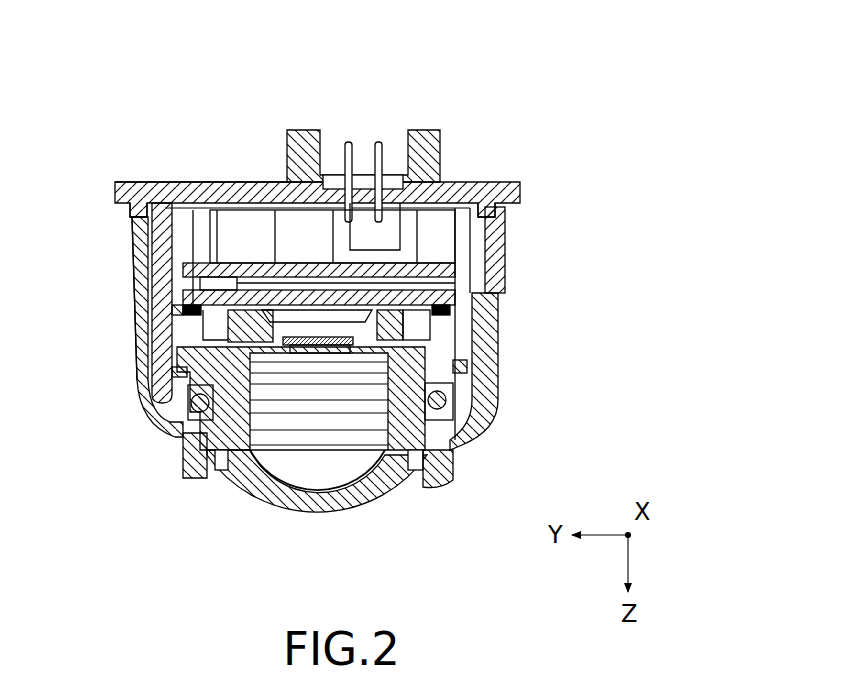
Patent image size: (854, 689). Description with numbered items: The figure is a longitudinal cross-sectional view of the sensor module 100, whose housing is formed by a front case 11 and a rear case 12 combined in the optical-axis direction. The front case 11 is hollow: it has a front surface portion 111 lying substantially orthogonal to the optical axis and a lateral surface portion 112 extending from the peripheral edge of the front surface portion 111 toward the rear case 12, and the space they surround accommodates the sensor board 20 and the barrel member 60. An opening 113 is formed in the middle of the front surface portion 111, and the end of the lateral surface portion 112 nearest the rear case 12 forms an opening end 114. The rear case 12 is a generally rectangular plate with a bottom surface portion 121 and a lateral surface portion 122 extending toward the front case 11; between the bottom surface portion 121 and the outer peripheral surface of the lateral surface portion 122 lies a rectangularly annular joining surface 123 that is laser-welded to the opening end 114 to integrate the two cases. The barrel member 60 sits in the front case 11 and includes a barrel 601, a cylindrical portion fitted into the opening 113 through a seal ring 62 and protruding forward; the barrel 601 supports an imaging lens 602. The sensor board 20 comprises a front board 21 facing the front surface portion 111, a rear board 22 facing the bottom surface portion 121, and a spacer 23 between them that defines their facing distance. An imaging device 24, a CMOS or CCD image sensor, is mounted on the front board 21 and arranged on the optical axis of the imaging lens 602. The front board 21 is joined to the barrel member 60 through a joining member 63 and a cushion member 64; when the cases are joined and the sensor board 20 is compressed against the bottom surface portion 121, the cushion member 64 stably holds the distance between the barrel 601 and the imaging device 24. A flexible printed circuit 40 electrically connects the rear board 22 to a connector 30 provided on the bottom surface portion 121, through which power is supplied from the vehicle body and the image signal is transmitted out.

The sensor module 100 is at (491, 100).
The rear case 12 is at (182, 128).
The bottom surface portion 121 is at (182, 180).
The joining surface 123 is at (128, 217).
The lateral surface portion 122 is at (147, 240).
The lateral surface portion 112 is at (133, 267).
The front case 11 is at (269, 366).
The front surface portion 111 is at (470, 440).
The opening 113 is at (217, 470).
The opening end 114 is at (521, 193).
The joining member 63 is at (175, 312).
The cushion member 64 is at (172, 345).
The barrel 601 is at (195, 405).
The imaging lens 602 is at (368, 506).
The barrel member 60 is at (302, 473).
The seal ring 62 is at (432, 400).
The connector 30 is at (367, 150).
The flexible printed circuit 40 is at (285, 233).
The sensor board 20 is at (566, 220).
The rear board 22 is at (507, 240).
The spacer 23 is at (427, 283).
The front board 21 is at (473, 298).
The imaging device 24 is at (403, 318).